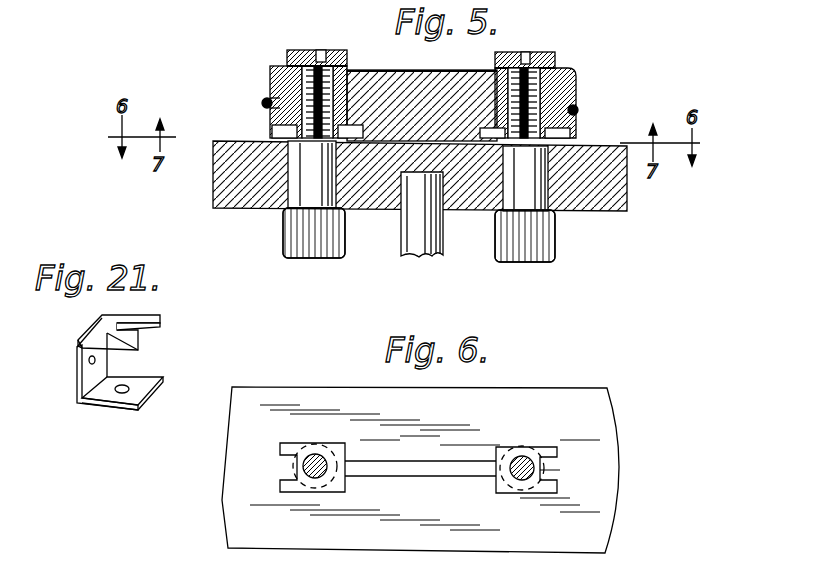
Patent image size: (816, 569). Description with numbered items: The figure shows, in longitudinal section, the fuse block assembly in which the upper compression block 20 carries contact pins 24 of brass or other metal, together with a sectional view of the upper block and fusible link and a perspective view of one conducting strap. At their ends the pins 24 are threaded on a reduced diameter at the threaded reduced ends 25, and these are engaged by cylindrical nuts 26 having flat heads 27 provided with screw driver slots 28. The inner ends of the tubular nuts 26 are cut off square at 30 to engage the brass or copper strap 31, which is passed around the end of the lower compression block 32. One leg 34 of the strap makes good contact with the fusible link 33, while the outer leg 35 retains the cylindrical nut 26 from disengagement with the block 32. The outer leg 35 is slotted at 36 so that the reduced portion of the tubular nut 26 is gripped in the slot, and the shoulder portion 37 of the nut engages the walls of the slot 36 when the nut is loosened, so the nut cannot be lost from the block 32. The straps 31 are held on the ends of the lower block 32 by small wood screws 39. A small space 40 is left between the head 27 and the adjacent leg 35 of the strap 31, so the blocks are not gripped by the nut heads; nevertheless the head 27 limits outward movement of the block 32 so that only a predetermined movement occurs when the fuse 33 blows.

In FIG. 5, the upper compression block 20 is at (628, 202).
In FIG. 6, the upper compression block 20 is at (615, 478).
In FIG. 5, the pins 24 is at (563, 212).
In FIG. 5, the threaded reduced ends 25 is at (272, 131).
In FIG. 5, the cylindrical nuts 26 is at (396, 76).
In FIG. 5, the flat heads 27 is at (302, 50).
In FIG. 5, the screw driver slots 28 is at (340, 42).
In FIG. 5, the square-cut inner ends 30 is at (578, 133).
In FIG. 6, the square-cut inner ends 30 is at (302, 455).
In FIG. 5, the strap 31 is at (271, 80).
In FIG. 21, the strap 31 is at (77, 365).
In FIG. 5, the lower compression block 32 is at (434, 75).
In FIG. 5, the fusible link 33 is at (455, 190).
In FIG. 6, the fusible link 33 is at (436, 462).
In FIG. 21, the leg 34 is at (118, 404).
In FIG. 21, the outer leg 35 is at (137, 318).
In FIG. 21, the slot 36 is at (160, 325).
In FIG. 5, the shoulder portion 37 is at (577, 91).
In FIG. 5, the wood screws 39 is at (263, 103).
In FIG. 5, the space 40 is at (290, 66).